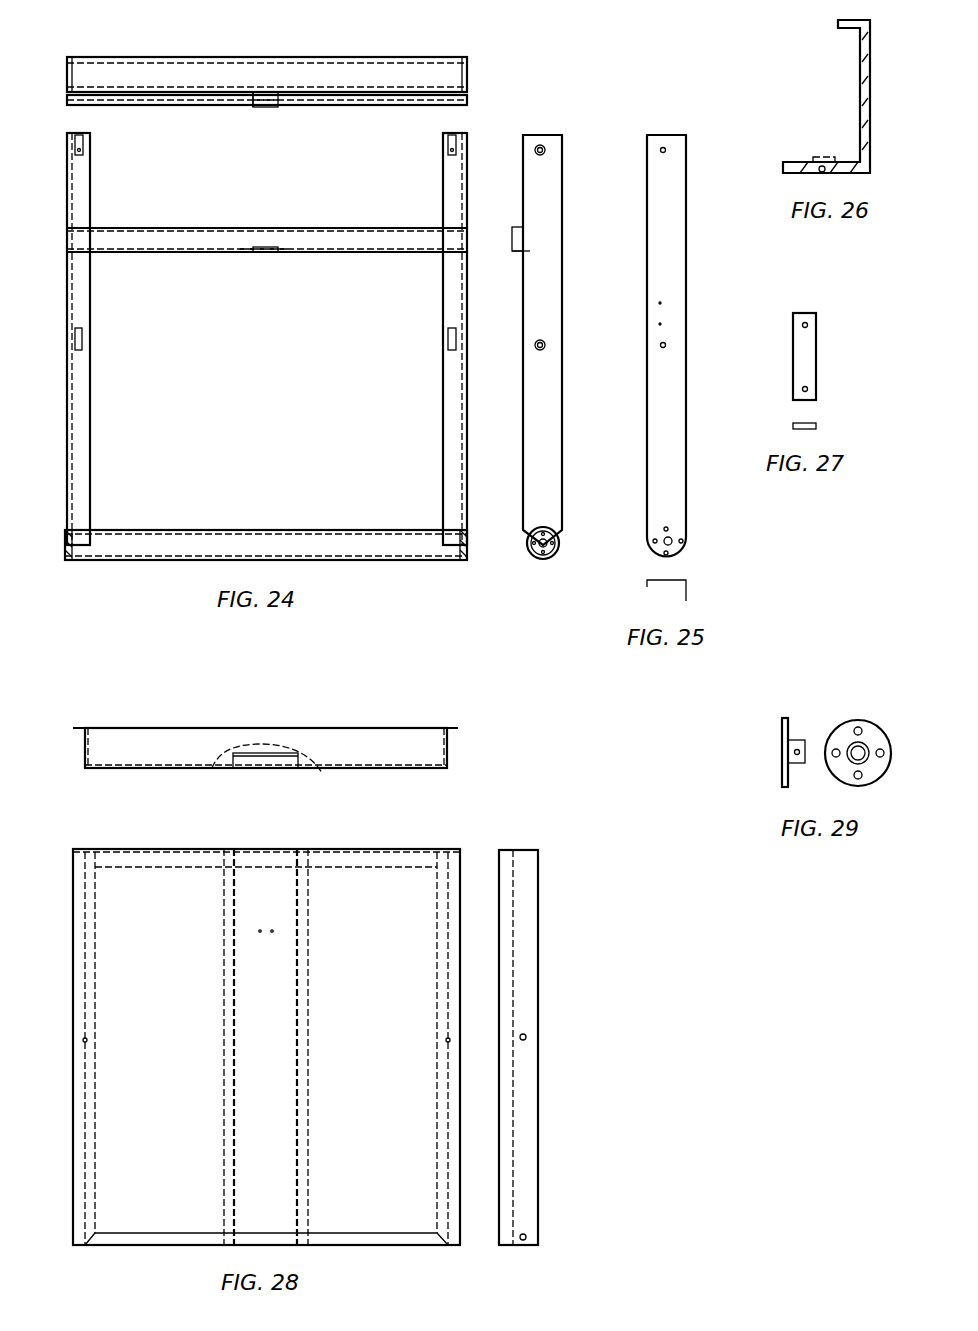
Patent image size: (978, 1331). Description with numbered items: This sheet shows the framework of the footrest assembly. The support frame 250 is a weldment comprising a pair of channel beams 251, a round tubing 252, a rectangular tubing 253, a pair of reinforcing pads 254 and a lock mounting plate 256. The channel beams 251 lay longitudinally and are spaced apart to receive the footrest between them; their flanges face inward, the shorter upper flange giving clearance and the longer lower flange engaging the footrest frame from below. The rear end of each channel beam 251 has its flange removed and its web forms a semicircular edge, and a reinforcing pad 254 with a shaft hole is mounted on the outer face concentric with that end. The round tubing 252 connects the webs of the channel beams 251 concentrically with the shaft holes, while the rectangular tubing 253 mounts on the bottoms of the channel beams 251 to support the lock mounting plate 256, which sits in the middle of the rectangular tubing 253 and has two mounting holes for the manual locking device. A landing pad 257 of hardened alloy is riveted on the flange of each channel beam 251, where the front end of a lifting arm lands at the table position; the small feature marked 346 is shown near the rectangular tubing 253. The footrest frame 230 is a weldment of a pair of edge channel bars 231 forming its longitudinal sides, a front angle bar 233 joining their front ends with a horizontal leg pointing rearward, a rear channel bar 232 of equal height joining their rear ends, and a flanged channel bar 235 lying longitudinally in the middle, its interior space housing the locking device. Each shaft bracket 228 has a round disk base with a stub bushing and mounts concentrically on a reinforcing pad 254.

In FIG. 24, the support frame 250 is at (137, 583).
In FIG. 24, the channel beam 251 is at (90, 212).
In FIG. 25, the channel beam 251 is at (562, 437).
In FIG. 26, the channel beam 251 is at (860, 56).
In FIG. 24, the round tubing 252 is at (268, 60).
In FIG. 24, the rectangular tubing 253 is at (283, 104).
In FIG. 25, the rectangular tubing 253 is at (513, 230).
In FIG. 24, the reinforcing pad 254 is at (66, 546).
In FIG. 25, the reinforcing pad 254 is at (553, 531).
In FIG. 24, the lock mounting plate 256 is at (262, 252).
In FIG. 25, the lock mounting plate 256 is at (516, 252).
In FIG. 26, the lock mounting plate 256 is at (793, 167).
In FIG. 27, the lock mounting plate 256 is at (919, 245).
In FIG. 24, the landing pad 257 is at (82, 144).
In FIG. 26, the landing pad 257 is at (815, 157).
In FIG. 27, the landing pad 257 is at (816, 356).
In FIG. 24, the fastener slot 346 is at (252, 96).
In FIG. 28, the footrest frame 230 is at (140, 716).
In FIG. 28, the edge channel bar 231 is at (538, 888).
In FIG. 28, the rear channel bar 232 is at (330, 1233).
In FIG. 28, the front angle bar 233 is at (266, 728).
In FIG. 28, the flanged channel bar 235 is at (320, 773).
In FIG. 29, the shaft bracket 228 is at (785, 718).